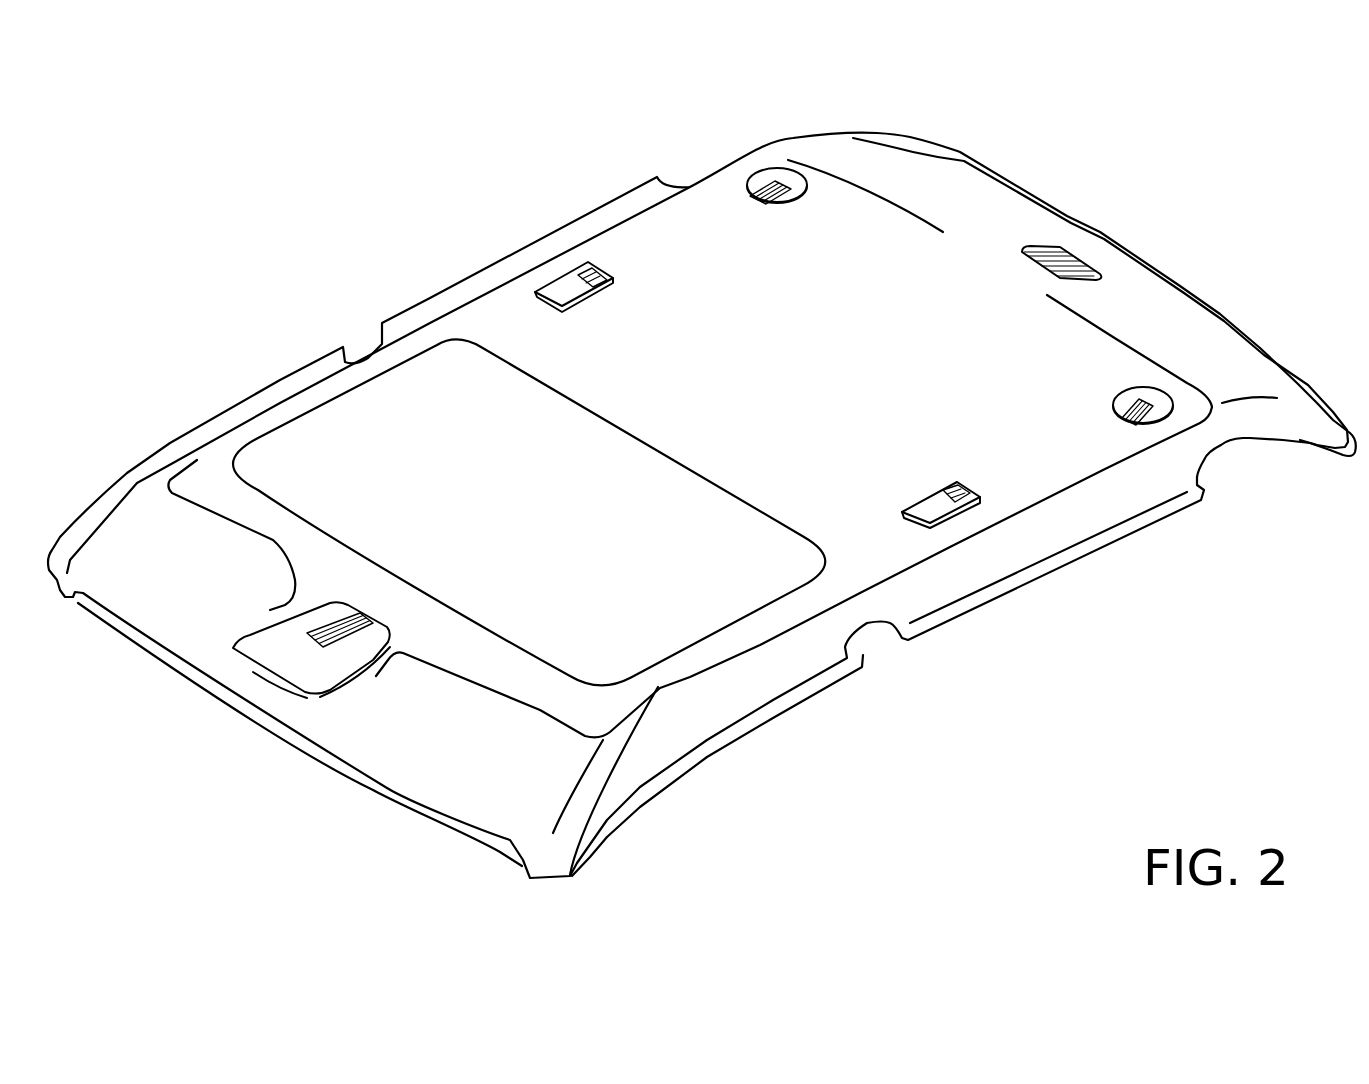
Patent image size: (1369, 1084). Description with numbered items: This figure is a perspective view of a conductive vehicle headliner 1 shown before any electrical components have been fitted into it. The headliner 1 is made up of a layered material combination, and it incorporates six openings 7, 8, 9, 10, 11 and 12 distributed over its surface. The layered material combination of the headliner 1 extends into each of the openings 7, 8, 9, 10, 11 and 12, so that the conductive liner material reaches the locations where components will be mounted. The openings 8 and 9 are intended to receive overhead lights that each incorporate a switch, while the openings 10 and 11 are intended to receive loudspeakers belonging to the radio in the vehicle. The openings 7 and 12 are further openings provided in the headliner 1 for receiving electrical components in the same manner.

The headliner 1 is at (928, 757).
The opening 7 is at (281, 658).
The opening 8 is at (938, 482).
The opening 9 is at (580, 268).
The opening 10 is at (760, 182).
The opening 11 is at (1118, 425).
The opening 12 is at (1075, 257).